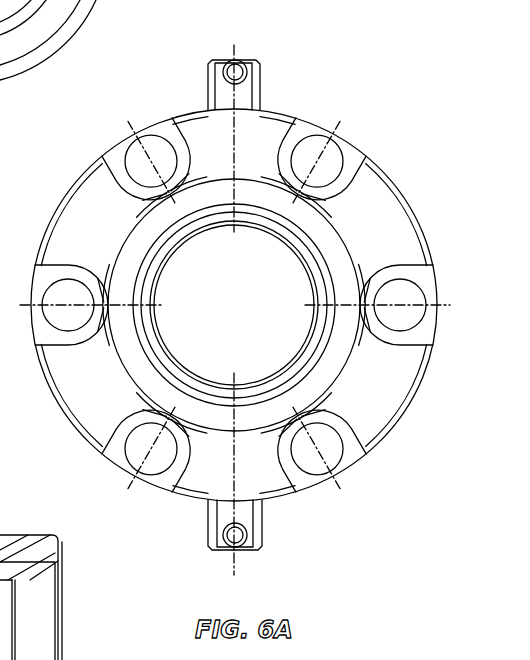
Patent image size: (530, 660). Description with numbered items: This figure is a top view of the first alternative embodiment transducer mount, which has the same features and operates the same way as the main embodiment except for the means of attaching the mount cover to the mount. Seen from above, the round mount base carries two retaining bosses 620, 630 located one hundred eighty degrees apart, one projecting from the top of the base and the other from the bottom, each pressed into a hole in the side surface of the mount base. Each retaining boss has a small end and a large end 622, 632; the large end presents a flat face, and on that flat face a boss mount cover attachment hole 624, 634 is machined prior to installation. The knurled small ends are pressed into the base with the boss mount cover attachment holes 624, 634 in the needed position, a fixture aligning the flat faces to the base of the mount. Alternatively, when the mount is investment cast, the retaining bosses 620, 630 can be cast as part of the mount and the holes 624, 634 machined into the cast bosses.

The retaining boss 620 is at (243, 71).
The large end 622 is at (223, 97).
The boss mount cover attachment hole 624 is at (240, 65).
The retaining boss 630 is at (244, 541).
The large end 632 is at (225, 513).
The boss mount cover attachment hole 634 is at (232, 547).